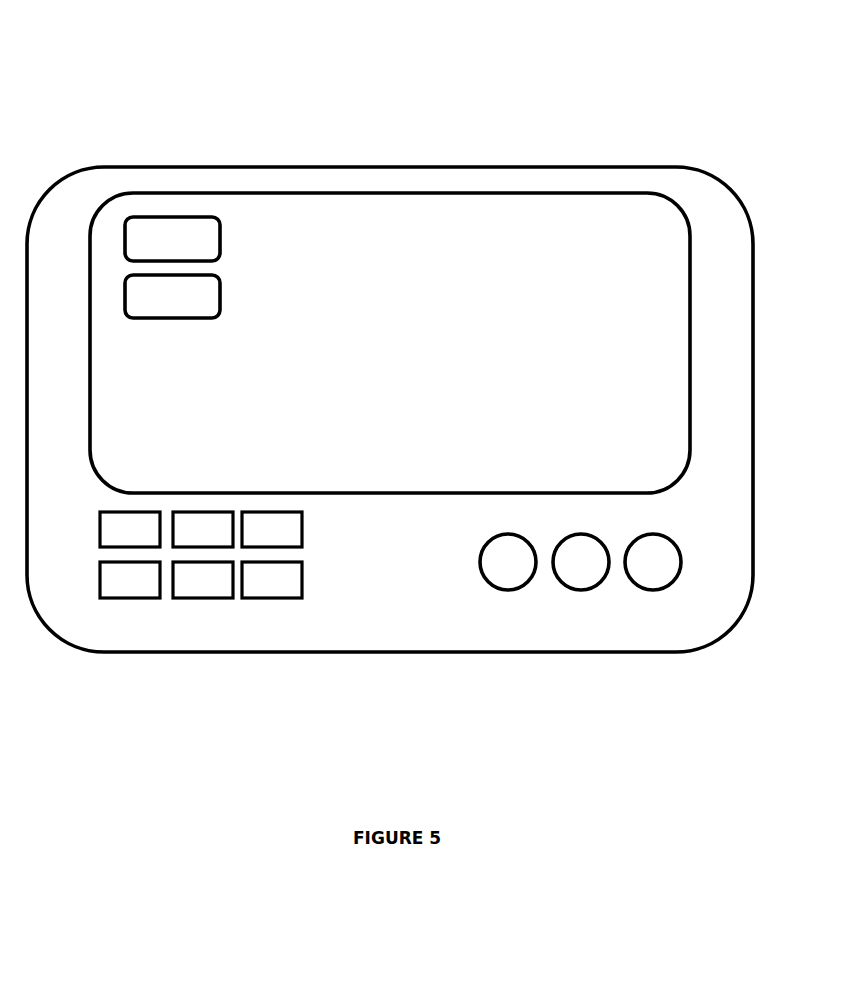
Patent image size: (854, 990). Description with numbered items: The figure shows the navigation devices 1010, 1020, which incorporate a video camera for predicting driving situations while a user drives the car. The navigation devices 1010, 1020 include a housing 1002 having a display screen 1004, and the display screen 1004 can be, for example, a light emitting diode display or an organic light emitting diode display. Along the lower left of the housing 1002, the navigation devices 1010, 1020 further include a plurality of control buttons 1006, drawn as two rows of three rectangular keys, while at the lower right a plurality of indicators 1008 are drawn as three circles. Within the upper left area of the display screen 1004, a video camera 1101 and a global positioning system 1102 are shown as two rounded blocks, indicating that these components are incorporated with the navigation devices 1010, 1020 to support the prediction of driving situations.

The navigation device 1010 is at (555, 92).
The navigation device 1020 is at (440, 391).
The housing 1002 is at (695, 168).
The display screen 1004 is at (693, 333).
The control buttons 1006 is at (207, 613).
The indicators 1008 is at (582, 607).
The video camera 1101 is at (221, 240).
The global positioning system (GPS) 1102 is at (221, 298).